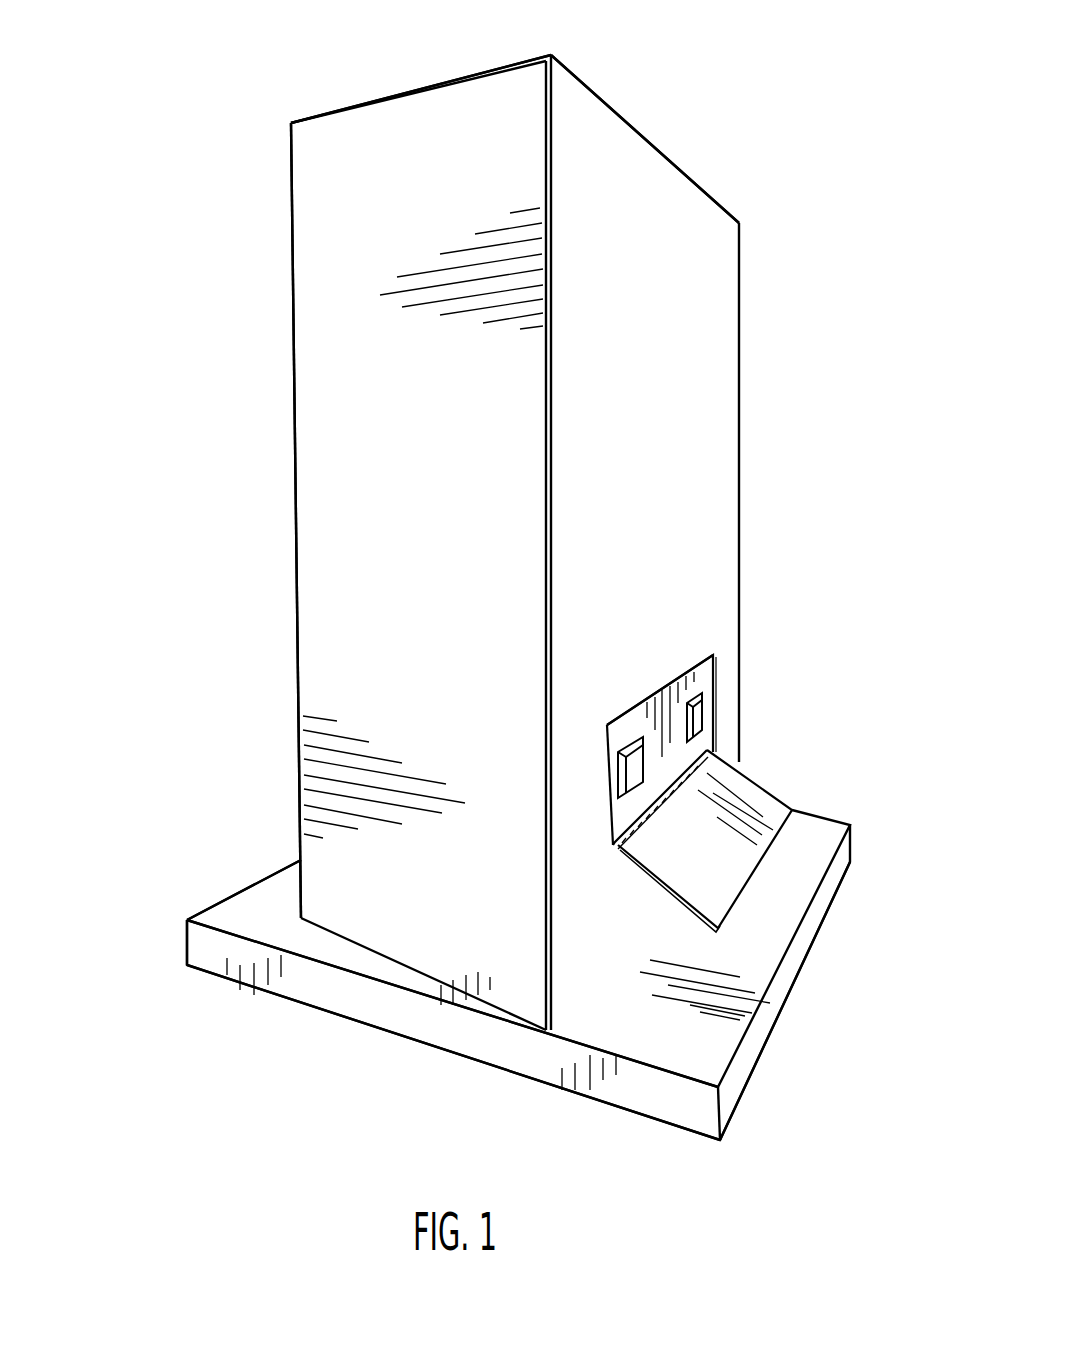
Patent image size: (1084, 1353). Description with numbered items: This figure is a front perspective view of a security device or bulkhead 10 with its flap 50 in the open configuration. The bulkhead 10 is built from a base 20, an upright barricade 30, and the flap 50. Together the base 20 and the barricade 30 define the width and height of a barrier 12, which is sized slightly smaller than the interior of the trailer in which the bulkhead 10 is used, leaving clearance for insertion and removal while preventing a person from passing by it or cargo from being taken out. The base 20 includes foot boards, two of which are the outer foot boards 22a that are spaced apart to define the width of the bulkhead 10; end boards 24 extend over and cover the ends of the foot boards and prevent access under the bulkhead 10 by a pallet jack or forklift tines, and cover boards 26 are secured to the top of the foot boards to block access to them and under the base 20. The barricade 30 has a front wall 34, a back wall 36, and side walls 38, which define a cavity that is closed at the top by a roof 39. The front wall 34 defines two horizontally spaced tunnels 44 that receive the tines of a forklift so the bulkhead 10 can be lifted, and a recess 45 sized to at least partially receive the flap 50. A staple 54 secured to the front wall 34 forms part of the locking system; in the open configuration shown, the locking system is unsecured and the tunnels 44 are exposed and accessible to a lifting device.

The bulkhead 10 is at (820, 213).
The barrier 12 is at (688, 508).
The base 20 is at (243, 968).
The outer foot boards 22a is at (427, 1020).
The end boards 24 is at (187, 945).
The cover boards 26 is at (245, 913).
The barricade 30 is at (296, 677).
The front wall 34 is at (642, 348).
The back wall 36 is at (293, 275).
The side walls 38 is at (392, 561).
The roof 39 is at (660, 165).
The tunnels 44 is at (628, 738).
The recess 45 is at (642, 718).
The flap 50 is at (760, 813).
The staple 54 is at (693, 668).